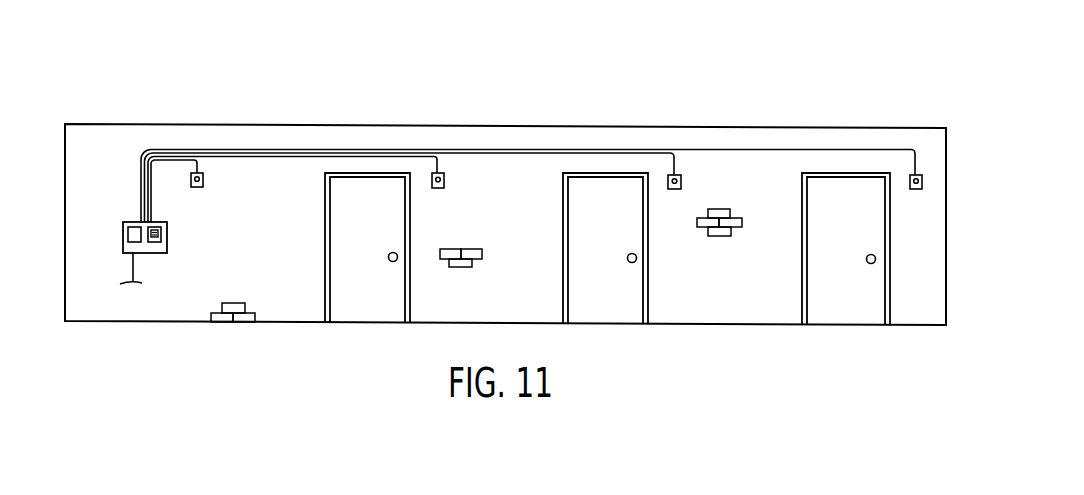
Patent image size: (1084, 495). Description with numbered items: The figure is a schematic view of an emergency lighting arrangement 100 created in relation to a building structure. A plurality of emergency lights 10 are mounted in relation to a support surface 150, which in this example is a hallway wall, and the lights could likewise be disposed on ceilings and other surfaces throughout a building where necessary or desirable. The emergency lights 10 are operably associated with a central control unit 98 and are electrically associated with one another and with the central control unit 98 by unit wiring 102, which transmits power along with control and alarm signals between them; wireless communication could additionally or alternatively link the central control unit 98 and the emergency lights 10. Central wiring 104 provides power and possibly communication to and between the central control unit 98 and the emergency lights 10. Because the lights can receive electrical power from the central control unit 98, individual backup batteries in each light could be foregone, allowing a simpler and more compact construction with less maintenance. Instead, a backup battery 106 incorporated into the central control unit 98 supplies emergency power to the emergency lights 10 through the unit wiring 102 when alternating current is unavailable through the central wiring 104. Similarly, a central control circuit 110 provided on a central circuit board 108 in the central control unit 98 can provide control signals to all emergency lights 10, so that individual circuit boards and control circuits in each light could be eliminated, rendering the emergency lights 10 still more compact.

The emergency lighting arrangement 100 is at (315, 88).
The unit wiring 102 is at (762, 152).
The emergency light 10 is at (922, 183).
The central control unit 98 is at (112, 238).
The central wiring 104 is at (128, 268).
The backup battery 106 is at (137, 226).
The central circuit board 108 is at (153, 242).
The central control circuit 110 is at (161, 233).
The support surface 150 is at (519, 228).